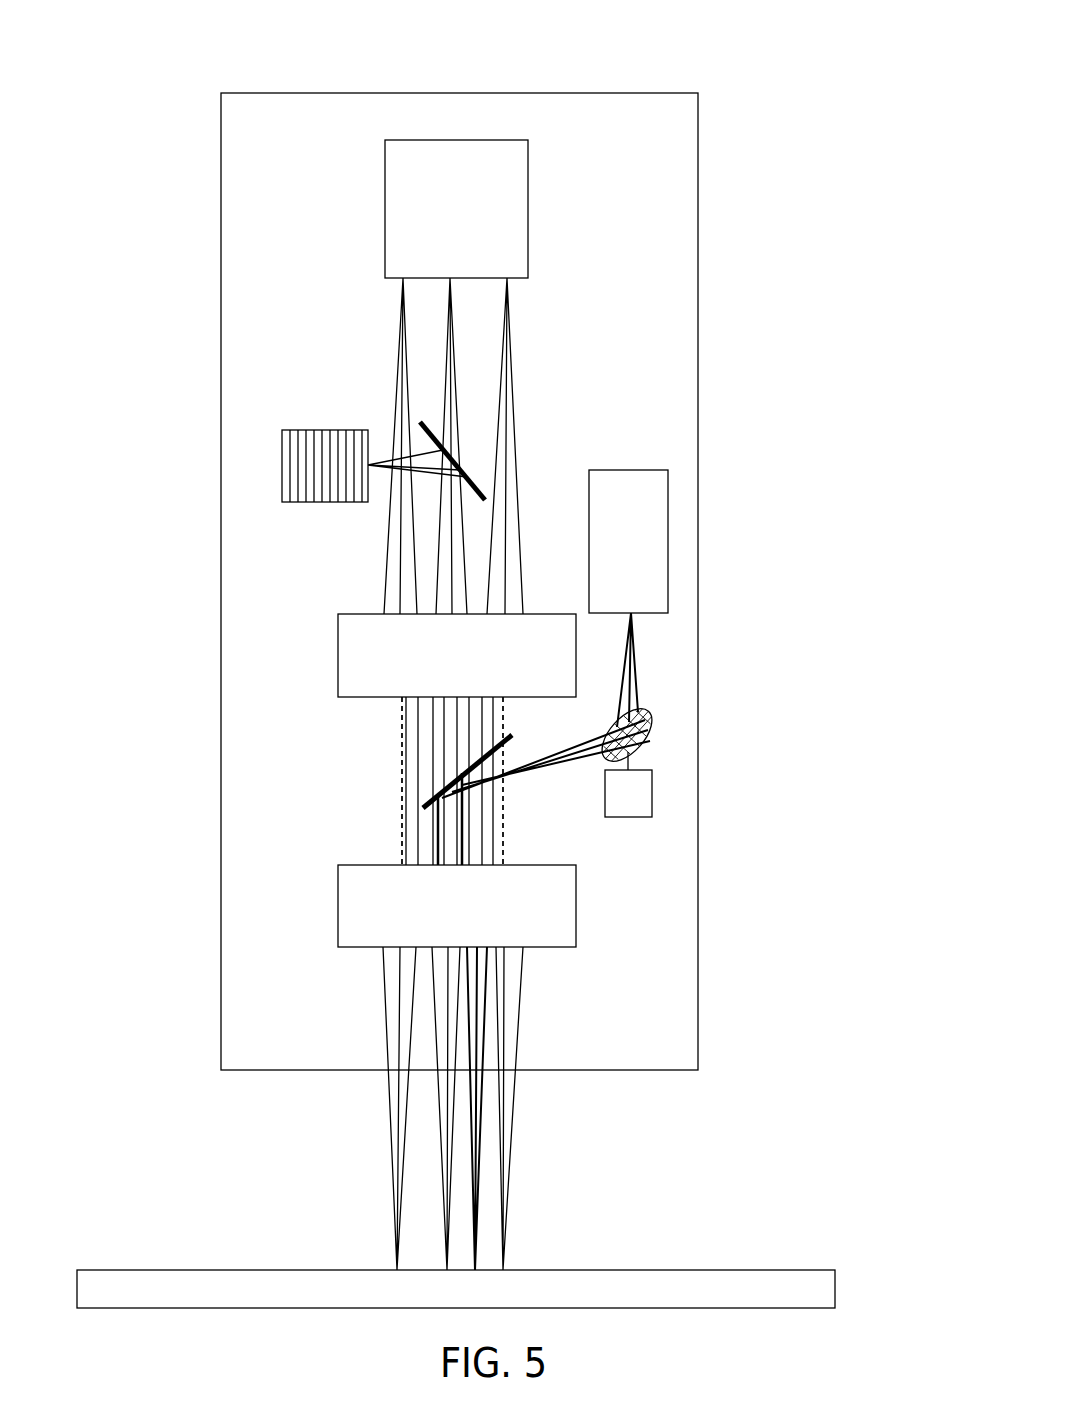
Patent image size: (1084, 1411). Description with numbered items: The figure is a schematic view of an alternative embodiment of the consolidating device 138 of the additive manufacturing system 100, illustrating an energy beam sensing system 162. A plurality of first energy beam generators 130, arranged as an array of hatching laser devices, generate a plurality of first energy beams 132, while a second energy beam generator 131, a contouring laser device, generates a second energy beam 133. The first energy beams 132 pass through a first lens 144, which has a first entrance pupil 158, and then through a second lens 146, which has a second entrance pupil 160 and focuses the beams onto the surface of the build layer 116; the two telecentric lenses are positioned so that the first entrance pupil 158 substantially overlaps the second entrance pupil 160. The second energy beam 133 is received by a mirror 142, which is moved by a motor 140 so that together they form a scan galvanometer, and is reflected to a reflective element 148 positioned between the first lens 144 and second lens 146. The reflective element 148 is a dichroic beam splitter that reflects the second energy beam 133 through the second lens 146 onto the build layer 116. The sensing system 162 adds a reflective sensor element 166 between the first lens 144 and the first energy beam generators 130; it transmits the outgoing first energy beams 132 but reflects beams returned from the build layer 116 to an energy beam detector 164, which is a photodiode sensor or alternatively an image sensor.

The additive manufacturing system 100 is at (632, 63).
The build layer 116 is at (167, 1270).
The first energy beam generators 130 is at (528, 205).
The second energy beam generator 131 is at (668, 543).
The first energy beams 132 is at (403, 322).
The second energy beam 133 is at (640, 672).
The consolidating device 138 is at (698, 285).
The motor 140 is at (652, 797).
The mirror 142 is at (652, 732).
The first lens 144 is at (338, 655).
The second lens 146 is at (338, 910).
The reflective element 148 is at (470, 762).
The first entrance pupil 158 is at (402, 817).
The second entrance pupil 160 is at (452, 781).
The energy beam sensing system 162 is at (146, 546).
The energy beam detector 164 is at (282, 452).
The reflective sensor element 166 is at (420, 422).